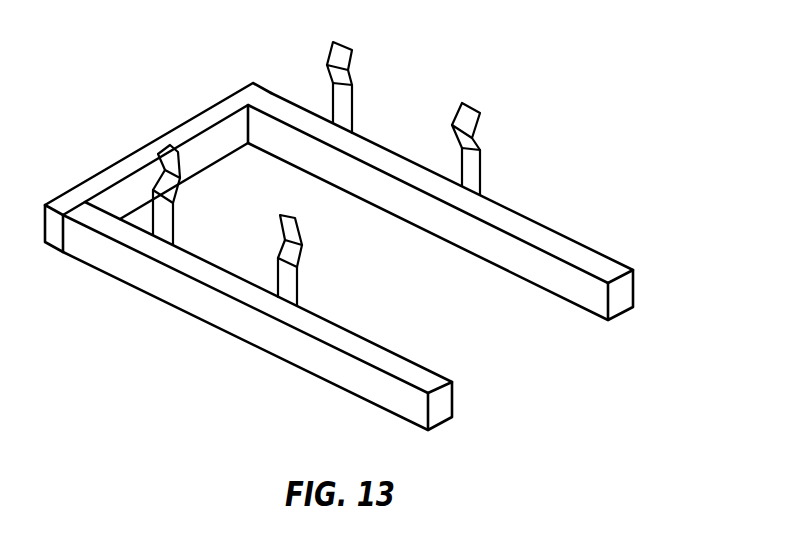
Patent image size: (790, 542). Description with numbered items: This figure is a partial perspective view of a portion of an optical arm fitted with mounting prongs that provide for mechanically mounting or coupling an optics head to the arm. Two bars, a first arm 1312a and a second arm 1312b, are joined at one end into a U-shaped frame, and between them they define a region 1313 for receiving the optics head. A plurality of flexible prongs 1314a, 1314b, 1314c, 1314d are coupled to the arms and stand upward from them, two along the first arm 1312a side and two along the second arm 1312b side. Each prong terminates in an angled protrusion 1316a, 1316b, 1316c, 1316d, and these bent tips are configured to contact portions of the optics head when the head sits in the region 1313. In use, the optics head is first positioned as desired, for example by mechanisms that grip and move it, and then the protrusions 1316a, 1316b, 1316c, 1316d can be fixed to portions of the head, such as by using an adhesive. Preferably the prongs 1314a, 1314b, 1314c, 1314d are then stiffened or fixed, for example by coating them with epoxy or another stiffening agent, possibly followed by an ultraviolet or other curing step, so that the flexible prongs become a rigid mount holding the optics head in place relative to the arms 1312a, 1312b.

The first arm 1312a is at (440, 410).
The second arm 1312b is at (620, 298).
The region 1313 is at (223, 230).
The flexible prong 1314a is at (165, 223).
The flexible prong 1314b is at (270, 313).
The flexible prong 1314c is at (348, 110).
The flexible prong 1314d is at (478, 170).
The angled protrusion 1316a is at (160, 160).
The angled protrusion 1316b is at (293, 228).
The angled protrusion 1316c is at (333, 62).
The angled protrusion 1316d is at (470, 115).